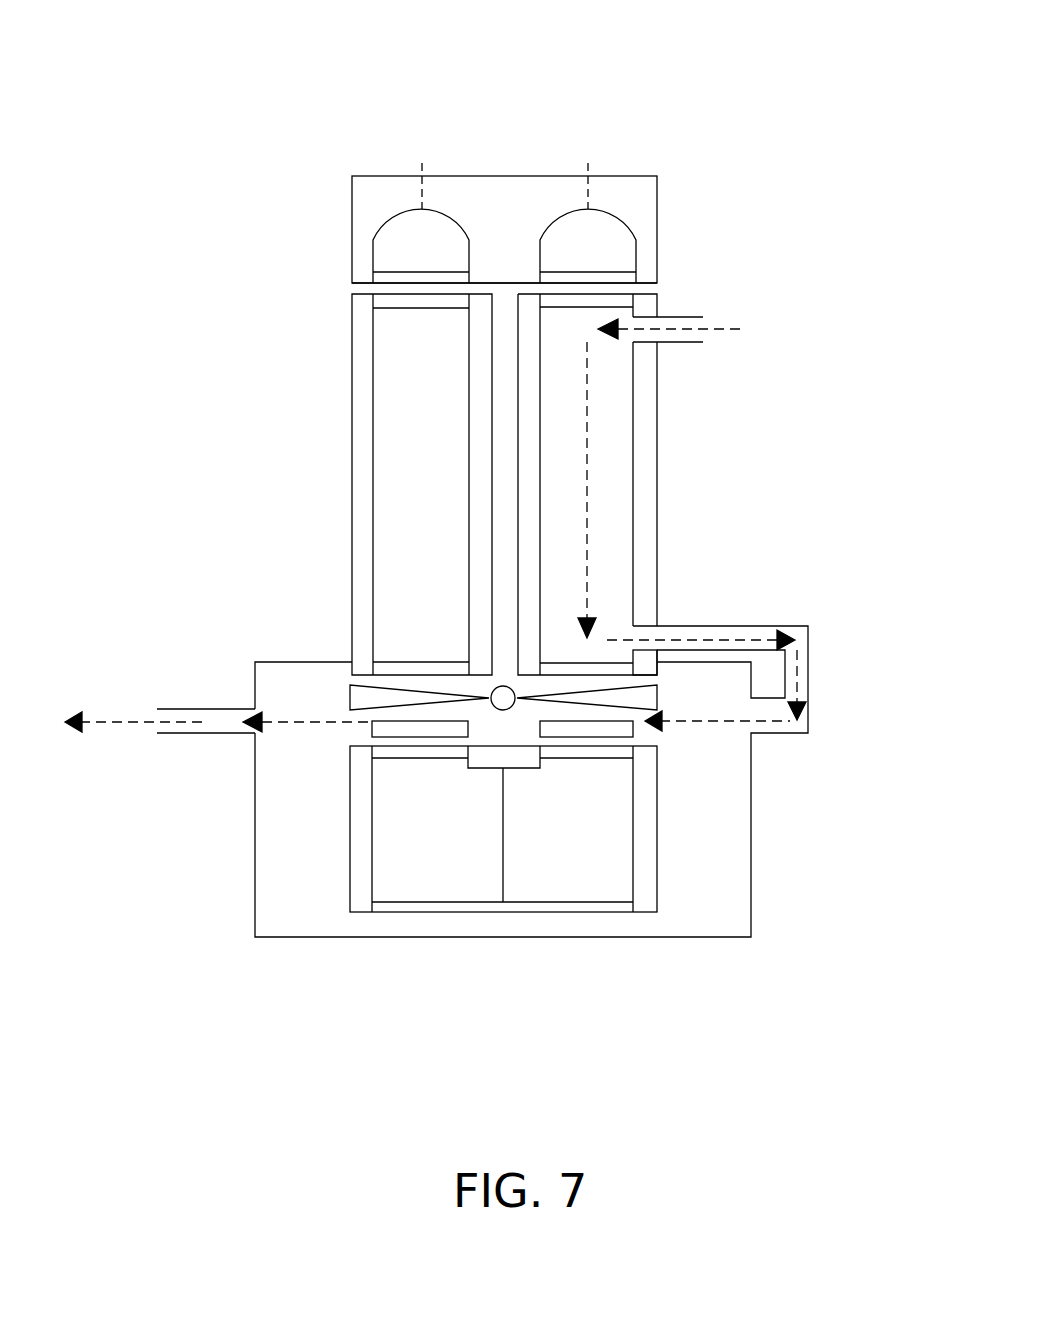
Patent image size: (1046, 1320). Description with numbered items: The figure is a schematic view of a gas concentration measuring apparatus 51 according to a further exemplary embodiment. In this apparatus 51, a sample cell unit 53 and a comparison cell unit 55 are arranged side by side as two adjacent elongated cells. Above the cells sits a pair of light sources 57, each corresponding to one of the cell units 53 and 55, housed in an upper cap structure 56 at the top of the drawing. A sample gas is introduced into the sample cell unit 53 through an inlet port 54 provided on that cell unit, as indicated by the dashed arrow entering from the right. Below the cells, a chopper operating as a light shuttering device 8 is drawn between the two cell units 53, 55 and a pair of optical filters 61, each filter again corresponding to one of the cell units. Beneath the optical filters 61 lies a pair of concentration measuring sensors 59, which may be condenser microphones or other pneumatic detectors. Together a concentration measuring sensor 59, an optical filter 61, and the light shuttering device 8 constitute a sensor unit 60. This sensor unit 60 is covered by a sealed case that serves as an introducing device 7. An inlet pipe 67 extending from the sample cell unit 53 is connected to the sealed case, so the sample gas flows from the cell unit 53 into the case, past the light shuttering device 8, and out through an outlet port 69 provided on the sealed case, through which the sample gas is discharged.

The gas concentration measuring apparatus 51 is at (667, 122).
The top cover 56 is at (507, 176).
The light sources 57 is at (434, 231).
The inlet port 54 is at (680, 317).
The comparison cell unit 55 is at (408, 457).
The sample cell unit 53 is at (610, 470).
The light shuttering device 8 is at (382, 695).
The introducing device 7 is at (751, 832).
The inlet pipe 67 is at (808, 662).
The outlet port 69 is at (190, 709).
The optical filters 61 is at (397, 732).
The sensor unit 60 is at (338, 913).
The concentration measuring sensors 59 is at (442, 880).